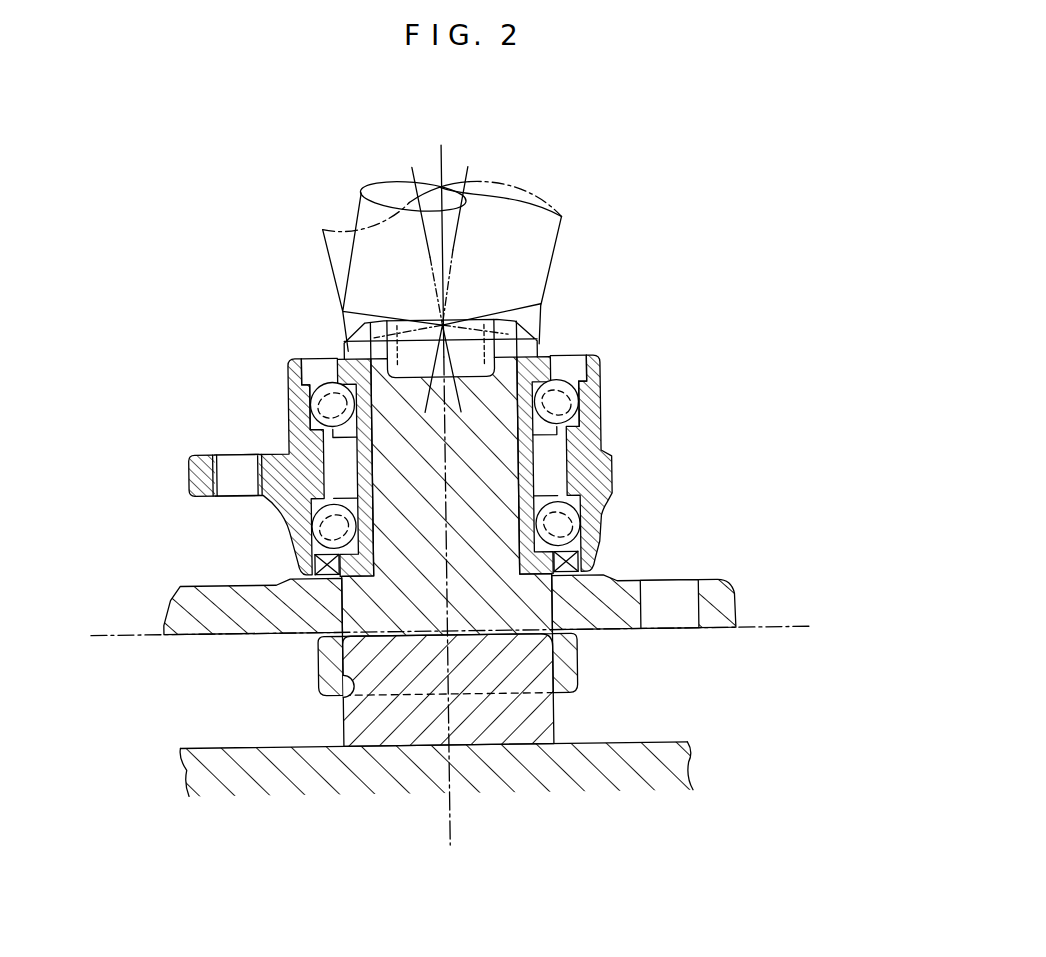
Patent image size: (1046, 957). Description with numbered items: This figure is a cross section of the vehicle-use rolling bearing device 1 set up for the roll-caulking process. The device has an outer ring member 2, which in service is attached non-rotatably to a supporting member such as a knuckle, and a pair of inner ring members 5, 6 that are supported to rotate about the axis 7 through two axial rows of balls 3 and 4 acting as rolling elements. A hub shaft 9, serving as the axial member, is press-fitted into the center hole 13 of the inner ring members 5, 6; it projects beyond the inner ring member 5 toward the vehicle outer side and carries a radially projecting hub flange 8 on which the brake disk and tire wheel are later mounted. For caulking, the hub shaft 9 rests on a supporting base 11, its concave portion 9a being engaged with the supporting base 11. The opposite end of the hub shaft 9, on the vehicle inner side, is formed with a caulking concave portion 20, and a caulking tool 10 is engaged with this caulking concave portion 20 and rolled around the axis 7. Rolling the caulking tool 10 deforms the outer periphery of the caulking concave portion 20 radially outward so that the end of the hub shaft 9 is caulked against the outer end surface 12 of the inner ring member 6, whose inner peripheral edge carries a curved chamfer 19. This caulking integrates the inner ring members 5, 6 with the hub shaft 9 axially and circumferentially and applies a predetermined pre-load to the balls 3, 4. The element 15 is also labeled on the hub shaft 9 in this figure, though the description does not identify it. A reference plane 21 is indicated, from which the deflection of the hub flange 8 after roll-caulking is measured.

The rolling bearing device 1 is at (262, 402).
The outer ring member 2 is at (603, 414).
The balls 3 is at (314, 521).
The balls 4 is at (290, 371).
The inner ring member 5 is at (320, 647).
The inner ring member 6 is at (331, 353).
The axis 7 is at (446, 163).
The hub flange 8 is at (184, 584).
The hub shaft 9 is at (584, 640).
The concave portion 9a is at (343, 701).
The caulking tool 10 is at (548, 213).
The supporting base 11 is at (545, 717).
The outer end surface 12 is at (546, 353).
The center hole 13 is at (562, 353).
The spindle 15 is at (413, 463).
The curved chamfer 19 is at (353, 340).
The caulking concave portion 20 is at (402, 340).
The reference plane 21 is at (130, 628).